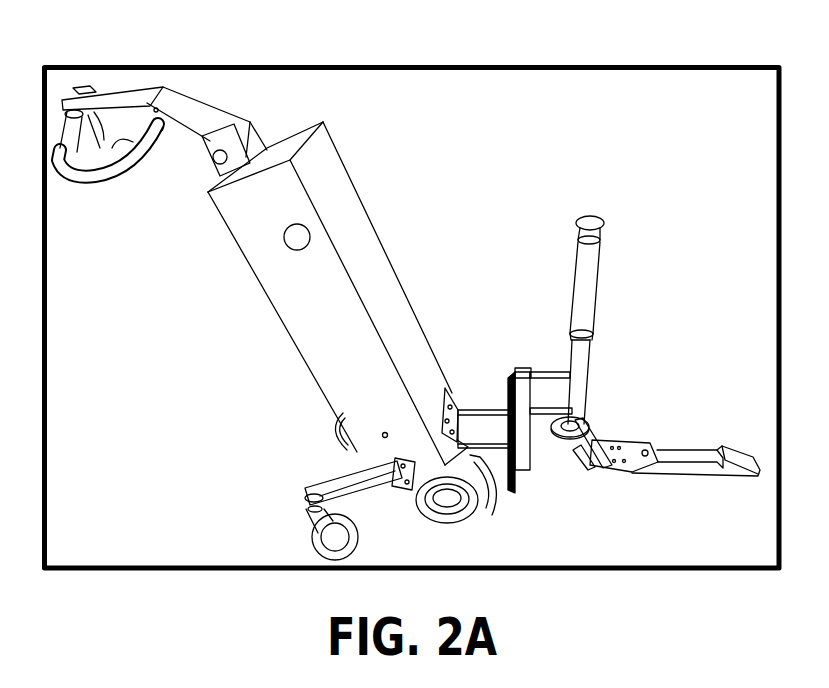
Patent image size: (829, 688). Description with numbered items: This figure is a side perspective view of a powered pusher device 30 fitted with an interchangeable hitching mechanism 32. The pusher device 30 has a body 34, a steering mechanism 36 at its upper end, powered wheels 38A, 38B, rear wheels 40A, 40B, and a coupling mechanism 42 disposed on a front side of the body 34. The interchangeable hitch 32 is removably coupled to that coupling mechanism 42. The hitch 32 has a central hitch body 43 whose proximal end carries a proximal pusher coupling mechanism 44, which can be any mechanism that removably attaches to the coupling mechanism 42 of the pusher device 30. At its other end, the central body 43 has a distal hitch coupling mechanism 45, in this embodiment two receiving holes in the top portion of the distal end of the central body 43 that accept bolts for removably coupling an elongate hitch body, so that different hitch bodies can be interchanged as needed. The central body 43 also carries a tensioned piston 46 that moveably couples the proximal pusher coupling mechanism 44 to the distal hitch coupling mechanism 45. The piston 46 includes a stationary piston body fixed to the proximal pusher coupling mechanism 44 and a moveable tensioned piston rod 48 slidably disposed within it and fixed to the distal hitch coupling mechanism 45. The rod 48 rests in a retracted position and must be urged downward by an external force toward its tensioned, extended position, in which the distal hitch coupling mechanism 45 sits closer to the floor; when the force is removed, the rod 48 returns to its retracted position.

The powered pusher device 30 is at (196, 297).
The interchangeable hitching mechanism 32 is at (699, 489).
The body 34 is at (378, 279).
The steering mechanism 36 is at (132, 93).
The powered wheel 38A is at (420, 500).
The powered wheel 38B is at (497, 486).
The rear wheel 40A is at (308, 540).
The rear wheel 40B is at (337, 433).
The coupling mechanism 42 is at (513, 487).
The central hitch body 43 is at (626, 427).
The proximal pusher coupling mechanism 44 is at (545, 454).
The distal hitch coupling mechanism 45 is at (612, 457).
The tensioned piston 46 is at (627, 261).
The piston rod 48 is at (582, 427).